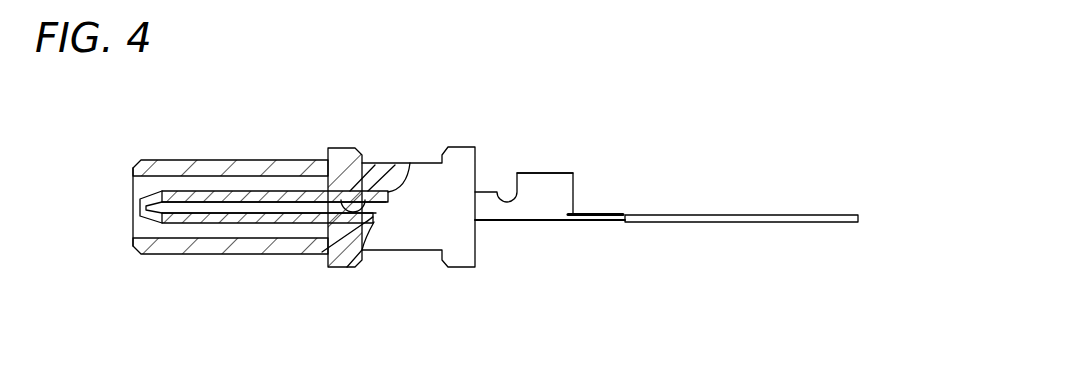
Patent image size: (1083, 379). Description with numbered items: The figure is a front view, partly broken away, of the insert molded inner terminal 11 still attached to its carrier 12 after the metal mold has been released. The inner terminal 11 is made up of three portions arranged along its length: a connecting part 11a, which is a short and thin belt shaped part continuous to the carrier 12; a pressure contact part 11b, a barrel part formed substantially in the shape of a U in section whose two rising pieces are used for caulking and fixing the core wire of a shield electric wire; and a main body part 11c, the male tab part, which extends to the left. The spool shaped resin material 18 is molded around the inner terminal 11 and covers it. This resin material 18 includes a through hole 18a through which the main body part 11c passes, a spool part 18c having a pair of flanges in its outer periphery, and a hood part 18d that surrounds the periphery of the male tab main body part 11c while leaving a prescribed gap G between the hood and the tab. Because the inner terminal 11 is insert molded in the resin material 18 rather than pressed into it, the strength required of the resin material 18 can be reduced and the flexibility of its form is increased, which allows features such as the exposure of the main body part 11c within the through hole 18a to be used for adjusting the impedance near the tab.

The resin material 18 is at (305, 159).
The hood part 18d is at (175, 160).
The through hole 18a is at (348, 200).
The spool part 18c is at (428, 163).
The inner terminal 11 is at (571, 161).
The connecting part 11a is at (607, 213).
The pressure contact part 11b is at (564, 172).
The main body part 11c is at (225, 191).
The carrier 12 is at (727, 213).
The gap G is at (226, 228).